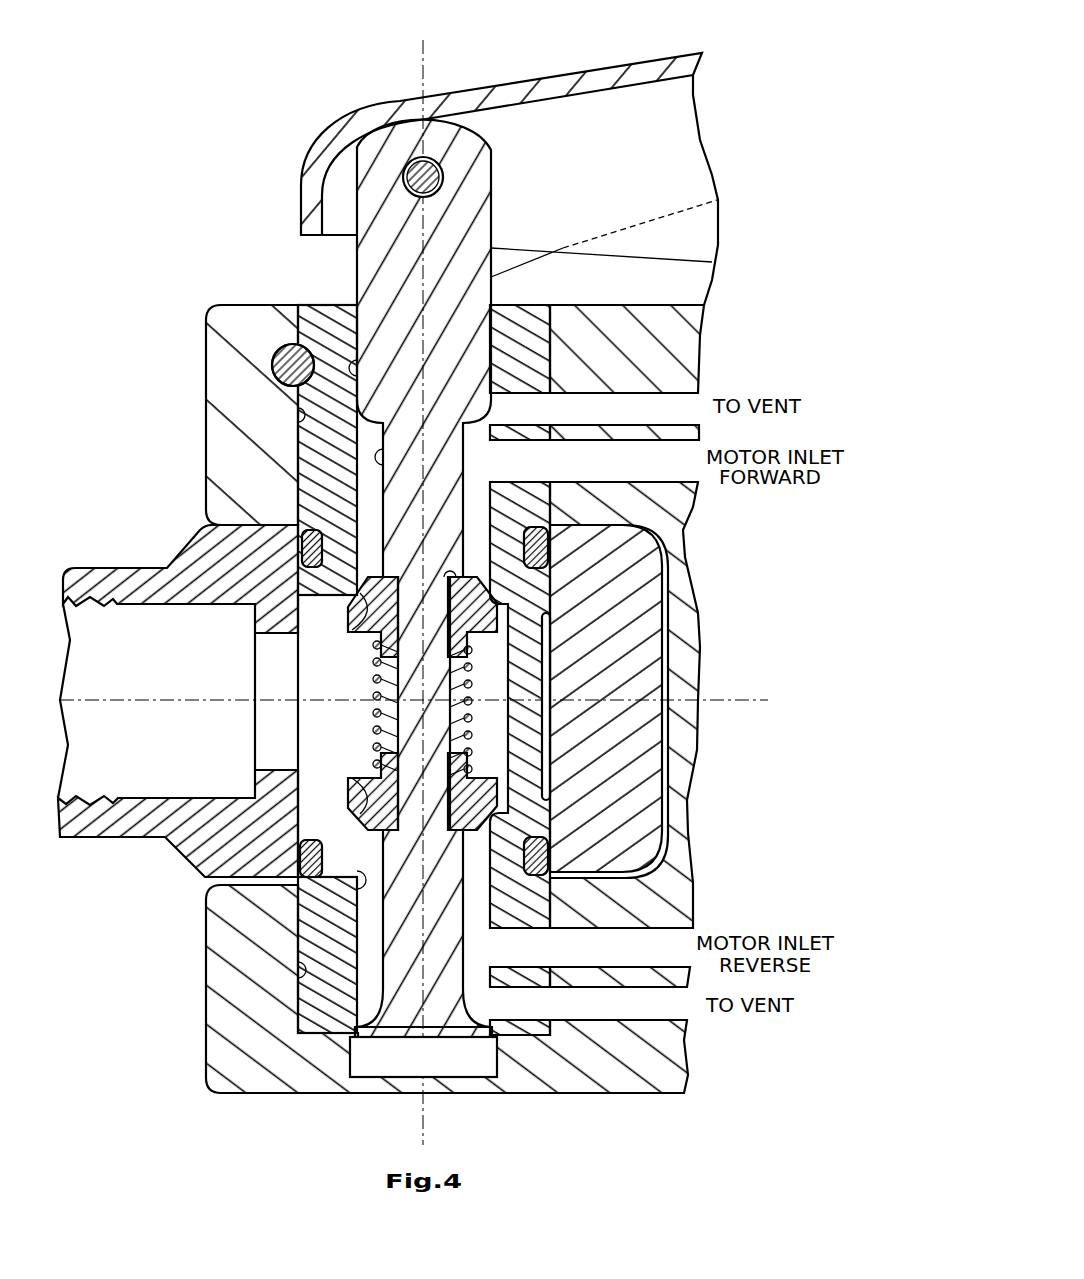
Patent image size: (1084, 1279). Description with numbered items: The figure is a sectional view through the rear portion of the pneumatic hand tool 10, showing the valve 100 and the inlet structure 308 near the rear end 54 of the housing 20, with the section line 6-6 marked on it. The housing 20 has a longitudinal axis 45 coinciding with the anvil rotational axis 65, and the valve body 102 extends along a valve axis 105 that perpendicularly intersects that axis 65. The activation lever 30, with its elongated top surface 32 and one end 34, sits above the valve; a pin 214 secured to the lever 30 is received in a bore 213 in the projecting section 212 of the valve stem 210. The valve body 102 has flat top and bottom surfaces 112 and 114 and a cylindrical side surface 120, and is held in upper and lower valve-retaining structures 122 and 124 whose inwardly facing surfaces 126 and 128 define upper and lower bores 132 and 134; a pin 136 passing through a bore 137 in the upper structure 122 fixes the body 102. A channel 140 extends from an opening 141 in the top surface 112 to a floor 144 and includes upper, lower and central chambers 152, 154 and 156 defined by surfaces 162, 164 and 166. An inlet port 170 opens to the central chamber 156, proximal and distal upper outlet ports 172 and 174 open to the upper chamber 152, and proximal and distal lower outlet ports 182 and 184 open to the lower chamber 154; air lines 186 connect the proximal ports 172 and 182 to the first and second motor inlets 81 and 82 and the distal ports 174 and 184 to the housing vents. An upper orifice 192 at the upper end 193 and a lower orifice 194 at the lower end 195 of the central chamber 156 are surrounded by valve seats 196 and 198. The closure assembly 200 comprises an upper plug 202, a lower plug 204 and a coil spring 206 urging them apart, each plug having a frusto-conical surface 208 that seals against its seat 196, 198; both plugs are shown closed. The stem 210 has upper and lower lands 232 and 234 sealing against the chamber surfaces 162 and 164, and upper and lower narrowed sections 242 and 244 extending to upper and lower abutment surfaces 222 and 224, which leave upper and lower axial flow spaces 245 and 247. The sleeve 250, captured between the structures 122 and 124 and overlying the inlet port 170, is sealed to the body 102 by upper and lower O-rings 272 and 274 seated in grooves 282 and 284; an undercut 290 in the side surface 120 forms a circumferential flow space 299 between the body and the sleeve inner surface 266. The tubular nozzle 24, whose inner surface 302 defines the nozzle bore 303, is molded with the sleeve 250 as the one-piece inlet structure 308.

The pneumatic hand tool 10 is at (714, 36).
The housing 20 is at (602, 300).
The air inlet nozzle 24 is at (137, 552).
The activation lever 30 is at (660, 50).
The elongated top surface 32 is at (525, 74).
The lever end 34 is at (335, 128).
The longitudinal axis 45 is at (113, 700).
The rear end 54 is at (206, 456).
The axis of rotation 65 is at (90, 700).
The first motor inlet 81 is at (700, 463).
The second motor inlet 82 is at (690, 946).
The valve 100 is at (270, 262).
The valve body 102 is at (320, 305).
The valve axis 105 is at (428, 62).
The top surface 112 is at (333, 303).
The bottom surface 114 is at (333, 1037).
The side surface 120 is at (296, 438).
The upper valve-retaining structure 122 is at (206, 422).
The lower valve-retaining structure 124 is at (206, 1002).
The upper inwardly facing cylindrical surface 126 is at (296, 398).
The lower inwardly facing cylindrical surface 128 is at (296, 969).
The upper bore 132 is at (286, 392).
The lower bore 134 is at (296, 946).
The pin 136 is at (272, 364).
The bore 137 is at (278, 352).
The channel 140 is at (455, 300).
The opening 141 is at (473, 310).
The floor 144 is at (385, 1078).
The upper chamber 152 is at (355, 477).
The lower chamber 154 is at (356, 906).
The central chamber 156 is at (307, 696).
The upper chamber surface 162 is at (355, 517).
The lower chamber surface 164 is at (352, 884).
The central chamber surface 166 is at (505, 722).
The inlet port 170 is at (296, 728).
The proximal upper outlet port 172 is at (542, 456).
The distal upper outlet port 174 is at (542, 409).
The proximal lower outlet port 182 is at (545, 948).
The distal lower outlet port 184 is at (545, 1004).
The system of air lines 186 is at (652, 388).
The upper orifice 192 is at (388, 598).
The upper end 193 is at (346, 600).
The lower orifice 194 is at (385, 805).
The lower end 195 is at (350, 778).
The upper valve seat 196 is at (362, 594).
The lower valve seat 198 is at (362, 810).
The closure assembly 200 is at (503, 612).
The upper plug 202 is at (548, 644).
The lower plug 204 is at (502, 794).
The spring 206 is at (522, 740).
The frusto-conical surface 208 is at (360, 590).
The valve stem 210 is at (485, 132).
The projecting section 212 is at (493, 158).
The bore 213 is at (446, 177).
The pin 214 is at (440, 192).
The upper abutment surface 222 is at (448, 574).
The lower abutment surface 224 is at (402, 832).
The upper land 232 is at (362, 366).
The lower land 234 is at (358, 978).
The upper narrowed section 242 is at (386, 456).
The lower narrowed section 244 is at (381, 966).
The upper axial flow space 245 is at (494, 502).
The lower axial flow space 247 is at (492, 902).
The sleeve 250 is at (170, 560).
The cylindrical inner surface 266 is at (549, 652).
The upper O-ring 272 is at (302, 545).
The lower O-ring 274 is at (298, 877).
The upper O-ring groove 282 is at (298, 567).
The lower O-ring groove 284 is at (298, 846).
The undercut 290 is at (549, 660).
The circumferential flow space 299 is at (555, 686).
The inner surface 302 is at (180, 608).
The nozzle bore 303 is at (172, 688).
The one-piece inlet structure 308 is at (98, 545).
The section line 6- 6 is at (157, 700).